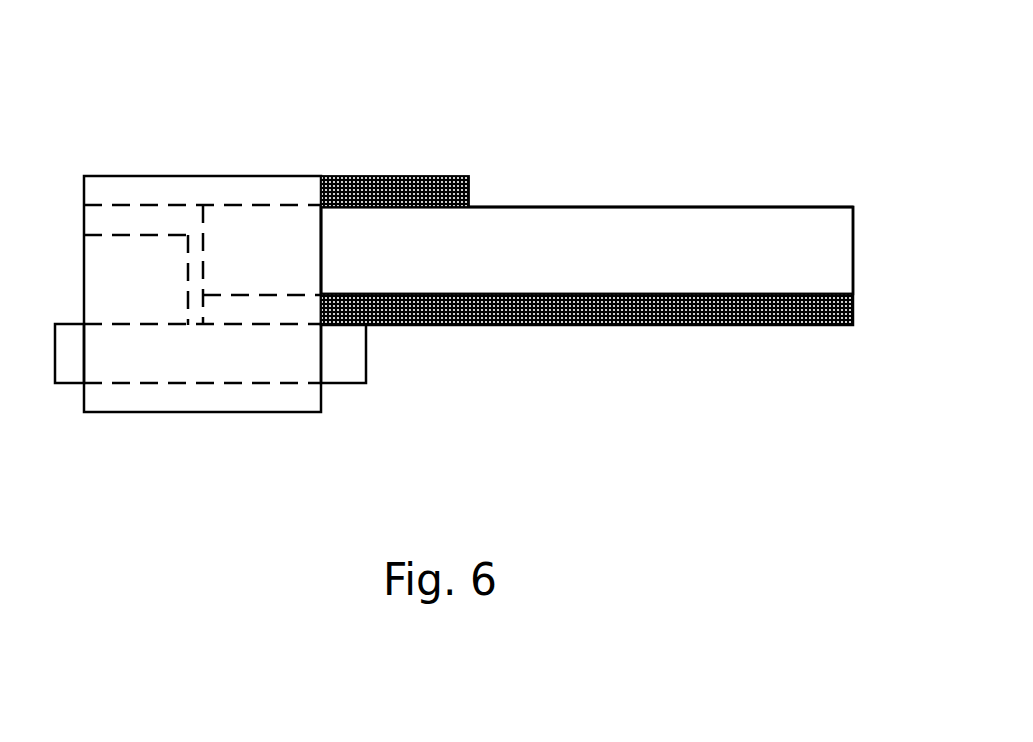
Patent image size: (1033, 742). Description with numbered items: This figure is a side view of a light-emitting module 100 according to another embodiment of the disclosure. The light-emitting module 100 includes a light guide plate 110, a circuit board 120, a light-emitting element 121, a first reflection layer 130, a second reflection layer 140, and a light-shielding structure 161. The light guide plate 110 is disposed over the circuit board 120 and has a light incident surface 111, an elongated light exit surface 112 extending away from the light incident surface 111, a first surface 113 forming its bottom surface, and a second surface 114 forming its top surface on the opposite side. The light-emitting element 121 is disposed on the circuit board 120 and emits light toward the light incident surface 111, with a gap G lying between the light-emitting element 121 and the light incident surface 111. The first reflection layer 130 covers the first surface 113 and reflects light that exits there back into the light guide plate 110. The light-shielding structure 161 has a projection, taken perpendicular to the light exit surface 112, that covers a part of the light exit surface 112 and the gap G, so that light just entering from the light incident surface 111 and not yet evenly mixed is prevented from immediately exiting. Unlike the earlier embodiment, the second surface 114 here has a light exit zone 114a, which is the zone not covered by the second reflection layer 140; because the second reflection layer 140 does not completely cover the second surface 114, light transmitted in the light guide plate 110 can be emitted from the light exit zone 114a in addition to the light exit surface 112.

The light-emitting module 100 is at (101, 70).
The light guide plate 110 is at (838, 252).
The light incident surface 111 is at (203, 227).
The light exit surface 112 is at (625, 262).
The first surface 113 is at (467, 297).
The second surface 114 is at (438, 207).
The light exit zone 114a is at (678, 205).
The circuit board 120 is at (345, 367).
The light-emitting element 121 is at (116, 235).
The first reflection layer 130 is at (600, 307).
The second reflection layer 140 is at (378, 187).
The light-shielding structure 161 is at (100, 397).
The gap G is at (190, 332).